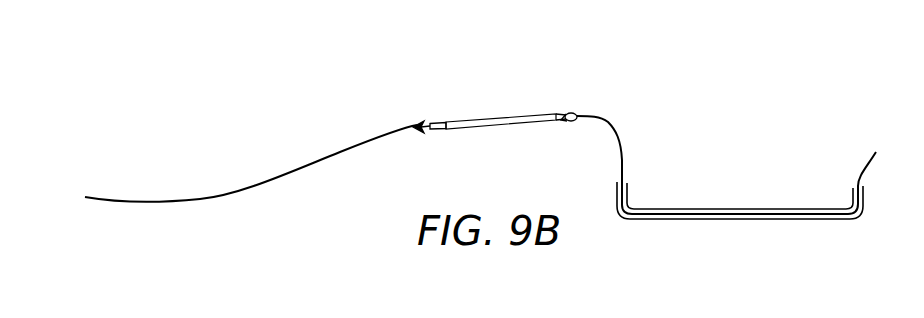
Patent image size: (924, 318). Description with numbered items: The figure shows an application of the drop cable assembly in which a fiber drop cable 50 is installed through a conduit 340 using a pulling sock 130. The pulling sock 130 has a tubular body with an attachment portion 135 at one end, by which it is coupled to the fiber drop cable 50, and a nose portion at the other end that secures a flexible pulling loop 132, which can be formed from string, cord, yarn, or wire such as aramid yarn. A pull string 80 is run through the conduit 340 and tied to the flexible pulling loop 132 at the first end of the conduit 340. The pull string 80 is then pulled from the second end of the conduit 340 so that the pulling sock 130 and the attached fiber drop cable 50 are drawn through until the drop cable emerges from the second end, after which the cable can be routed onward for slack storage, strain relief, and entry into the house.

The fiber drop cable 50 is at (196, 199).
The pulling sock 130 is at (477, 109).
The flexible pulling loop 132 is at (572, 112).
The attachment portion 135 is at (420, 131).
The pull string 80 is at (622, 138).
The conduit 340 is at (780, 207).